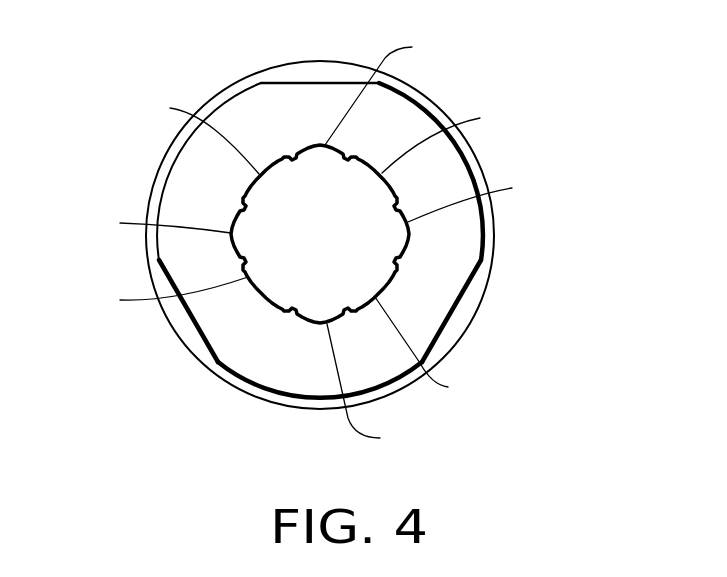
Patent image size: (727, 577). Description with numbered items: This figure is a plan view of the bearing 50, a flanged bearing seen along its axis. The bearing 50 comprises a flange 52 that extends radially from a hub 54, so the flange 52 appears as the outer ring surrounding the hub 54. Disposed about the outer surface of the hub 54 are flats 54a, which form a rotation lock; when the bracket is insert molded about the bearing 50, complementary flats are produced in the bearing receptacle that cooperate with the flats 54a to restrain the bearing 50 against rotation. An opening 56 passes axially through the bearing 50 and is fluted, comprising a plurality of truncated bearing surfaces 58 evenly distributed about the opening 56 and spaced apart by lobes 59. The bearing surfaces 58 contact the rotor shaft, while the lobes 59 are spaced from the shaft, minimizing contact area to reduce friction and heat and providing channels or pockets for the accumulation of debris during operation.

The bearing 50 is at (334, 226).
The flange 52 is at (493, 246).
The hub 54 is at (297, 358).
The flats 54a is at (336, 83).
The opening 56 is at (318, 202).
The bearing surfaces 58 is at (300, 250).
The lobes 59 is at (512, 38).